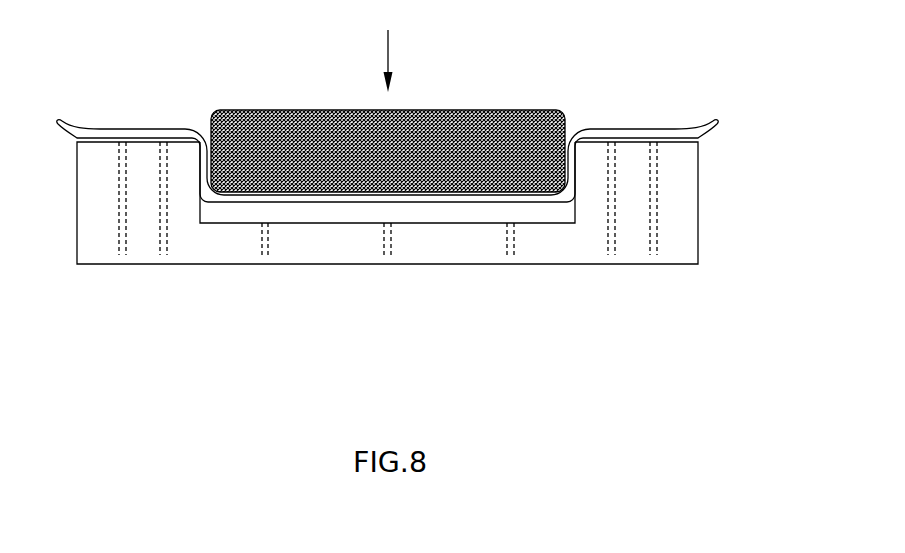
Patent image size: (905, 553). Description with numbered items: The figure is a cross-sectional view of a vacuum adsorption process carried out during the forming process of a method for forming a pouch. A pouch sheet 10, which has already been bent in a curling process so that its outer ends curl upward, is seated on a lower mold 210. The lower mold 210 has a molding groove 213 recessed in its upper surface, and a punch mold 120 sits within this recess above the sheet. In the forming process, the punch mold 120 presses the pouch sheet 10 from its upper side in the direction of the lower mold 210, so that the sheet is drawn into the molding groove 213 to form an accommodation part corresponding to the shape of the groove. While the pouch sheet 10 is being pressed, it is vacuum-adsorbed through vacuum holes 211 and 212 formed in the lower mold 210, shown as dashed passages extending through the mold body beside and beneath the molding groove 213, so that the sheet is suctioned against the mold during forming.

The pouch sheet 10 is at (648, 100).
The punch mold 120 is at (243, 108).
The lower mold 210 is at (714, 207).
The vacuum hole 211 is at (607, 245).
The vacuum hole 212 is at (503, 245).
The molding groove 213 is at (325, 211).